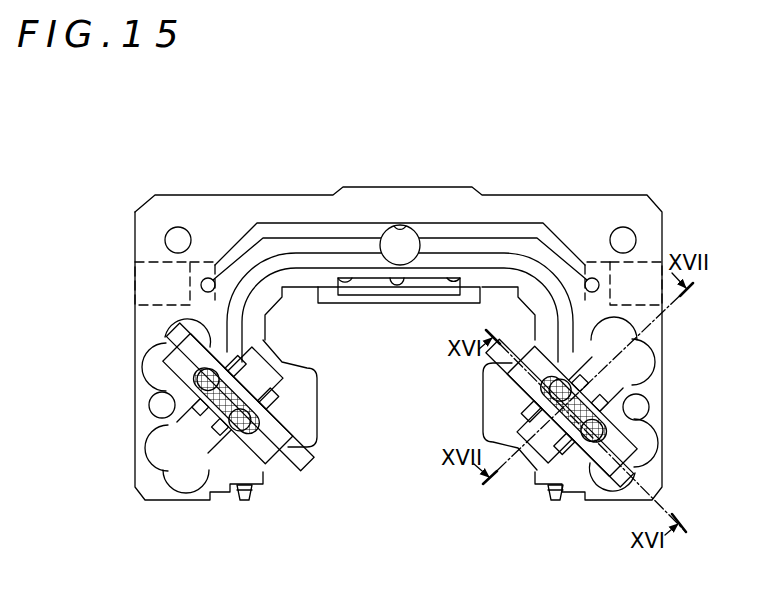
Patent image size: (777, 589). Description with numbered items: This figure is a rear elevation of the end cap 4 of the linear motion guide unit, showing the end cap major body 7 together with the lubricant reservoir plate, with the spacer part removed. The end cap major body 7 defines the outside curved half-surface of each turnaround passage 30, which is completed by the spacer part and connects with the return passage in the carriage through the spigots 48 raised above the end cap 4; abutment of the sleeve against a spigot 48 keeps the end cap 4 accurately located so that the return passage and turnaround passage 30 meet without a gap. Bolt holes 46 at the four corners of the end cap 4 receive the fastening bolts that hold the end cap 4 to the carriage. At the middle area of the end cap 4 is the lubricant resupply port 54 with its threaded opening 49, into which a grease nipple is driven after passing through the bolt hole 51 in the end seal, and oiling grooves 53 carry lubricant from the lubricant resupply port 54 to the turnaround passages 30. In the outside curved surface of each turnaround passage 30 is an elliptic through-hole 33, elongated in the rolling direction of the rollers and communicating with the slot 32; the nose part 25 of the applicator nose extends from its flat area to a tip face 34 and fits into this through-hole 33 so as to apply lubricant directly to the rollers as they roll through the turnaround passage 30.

The end cap 4 is at (536, 183).
The end cap major body 7 is at (452, 207).
The nose part 25 is at (550, 400).
The turnaround passage 30 is at (704, 314).
The slot 32 is at (216, 533).
The through-hole 33 is at (555, 405).
The tip face 34 is at (100, 322).
The bolt holes 46 is at (100, 408).
The spigots 48 is at (695, 352).
The threaded opening 49 is at (400, 226).
The bolt hole 51 is at (697, 212).
The oiling grooves 53 is at (293, 178).
The lubricant resupply port 54 is at (388, 243).